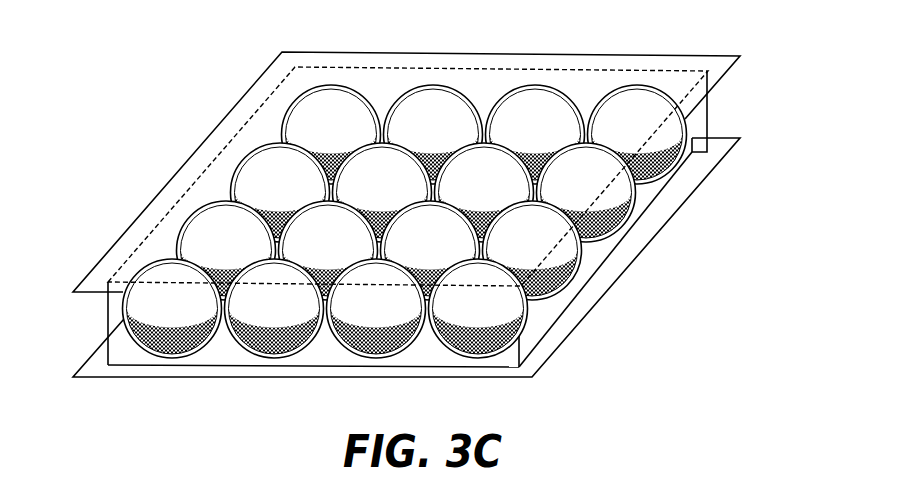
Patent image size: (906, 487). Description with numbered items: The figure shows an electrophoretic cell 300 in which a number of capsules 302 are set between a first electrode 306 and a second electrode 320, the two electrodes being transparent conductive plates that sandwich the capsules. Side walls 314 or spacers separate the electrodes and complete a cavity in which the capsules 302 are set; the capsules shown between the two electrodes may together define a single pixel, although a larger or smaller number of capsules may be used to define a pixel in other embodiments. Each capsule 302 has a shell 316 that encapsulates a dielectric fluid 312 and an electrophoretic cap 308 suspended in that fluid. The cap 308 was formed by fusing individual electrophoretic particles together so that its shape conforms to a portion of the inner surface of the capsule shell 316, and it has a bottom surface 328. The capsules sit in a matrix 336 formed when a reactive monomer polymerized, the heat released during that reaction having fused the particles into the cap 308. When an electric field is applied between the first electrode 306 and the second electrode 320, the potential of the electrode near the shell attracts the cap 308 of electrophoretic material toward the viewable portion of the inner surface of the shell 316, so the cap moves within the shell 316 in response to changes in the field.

The microwell assembly 300 is at (411, 225).
The capsules 302 is at (543, 315).
The first electrode 306 is at (744, 38).
The electrophoretic cap 308 is at (170, 268).
The dielectric fluid 312 is at (243, 343).
The side walls 314 is at (108, 312).
The shell 316 is at (140, 348).
The second electrode 320 is at (721, 152).
The bottom surface 328 is at (515, 343).
The matrix 336 is at (700, 124).